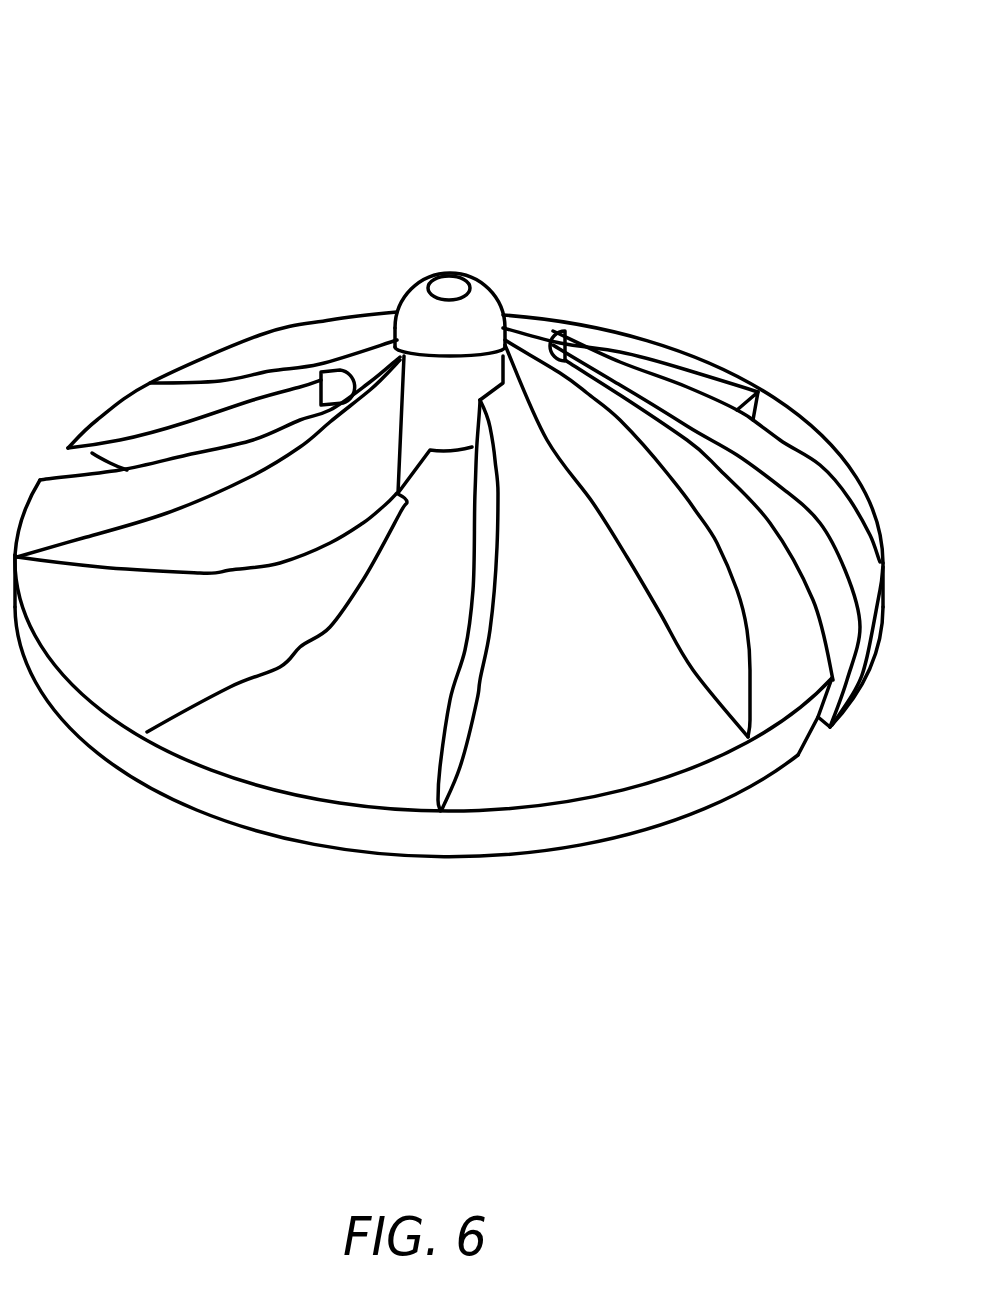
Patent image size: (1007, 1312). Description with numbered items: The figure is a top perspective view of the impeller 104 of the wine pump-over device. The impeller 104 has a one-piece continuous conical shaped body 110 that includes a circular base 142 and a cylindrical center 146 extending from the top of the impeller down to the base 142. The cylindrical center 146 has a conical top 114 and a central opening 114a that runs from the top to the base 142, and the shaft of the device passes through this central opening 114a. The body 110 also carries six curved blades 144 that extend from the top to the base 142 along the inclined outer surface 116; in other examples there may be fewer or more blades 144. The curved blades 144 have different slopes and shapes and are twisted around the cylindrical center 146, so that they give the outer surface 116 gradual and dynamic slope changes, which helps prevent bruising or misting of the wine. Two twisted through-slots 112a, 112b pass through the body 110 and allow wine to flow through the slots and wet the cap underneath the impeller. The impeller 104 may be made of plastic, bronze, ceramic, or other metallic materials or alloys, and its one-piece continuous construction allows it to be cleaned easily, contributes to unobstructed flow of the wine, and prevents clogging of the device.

The impeller 104 is at (172, 64).
The conical shaped body 110 is at (172, 644).
The twisted through-slot 112a is at (313, 400).
The twisted through-slot 112b is at (583, 357).
The conical top 114 is at (430, 405).
The central opening 114a is at (455, 287).
The inclined outer surface 116 is at (577, 537).
The circular base 142 is at (648, 803).
The curved blades 144 is at (780, 663).
The cylindrical center 146 is at (392, 322).